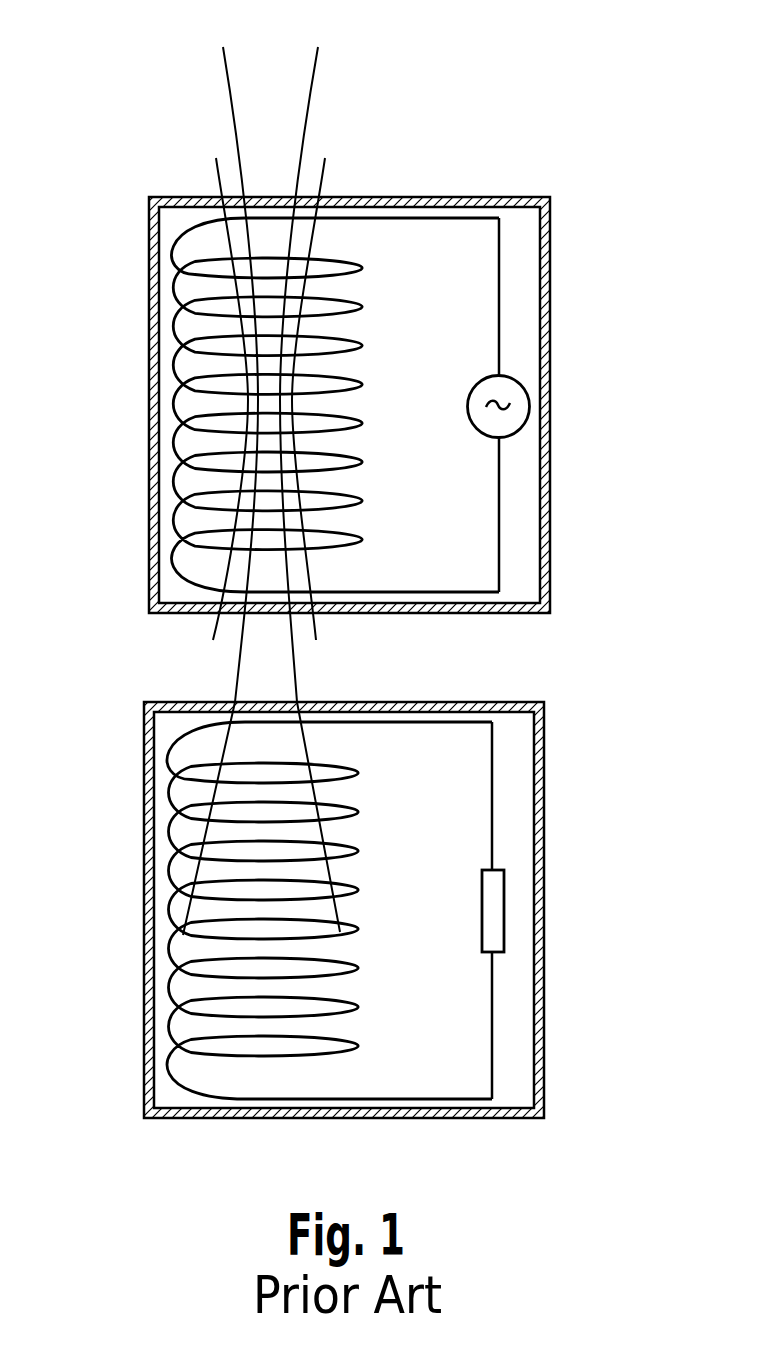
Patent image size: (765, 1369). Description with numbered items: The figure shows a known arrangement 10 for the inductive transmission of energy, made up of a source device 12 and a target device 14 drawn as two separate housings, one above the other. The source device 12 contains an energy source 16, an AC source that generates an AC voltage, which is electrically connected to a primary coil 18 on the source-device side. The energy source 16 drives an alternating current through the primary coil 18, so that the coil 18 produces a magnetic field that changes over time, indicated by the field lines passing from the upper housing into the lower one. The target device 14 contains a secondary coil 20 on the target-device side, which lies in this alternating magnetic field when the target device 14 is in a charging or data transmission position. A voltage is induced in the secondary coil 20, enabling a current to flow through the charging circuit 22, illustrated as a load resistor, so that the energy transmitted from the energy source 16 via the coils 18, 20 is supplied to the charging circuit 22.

The arrangement for the inductive transmission of energy 10 is at (458, 60).
The source device 12 is at (551, 243).
The target device 14 is at (546, 747).
The energy source 16 is at (517, 408).
The primary coil 18 is at (170, 402).
The secondary coil 20 is at (168, 905).
The charging circuit 22 is at (492, 912).